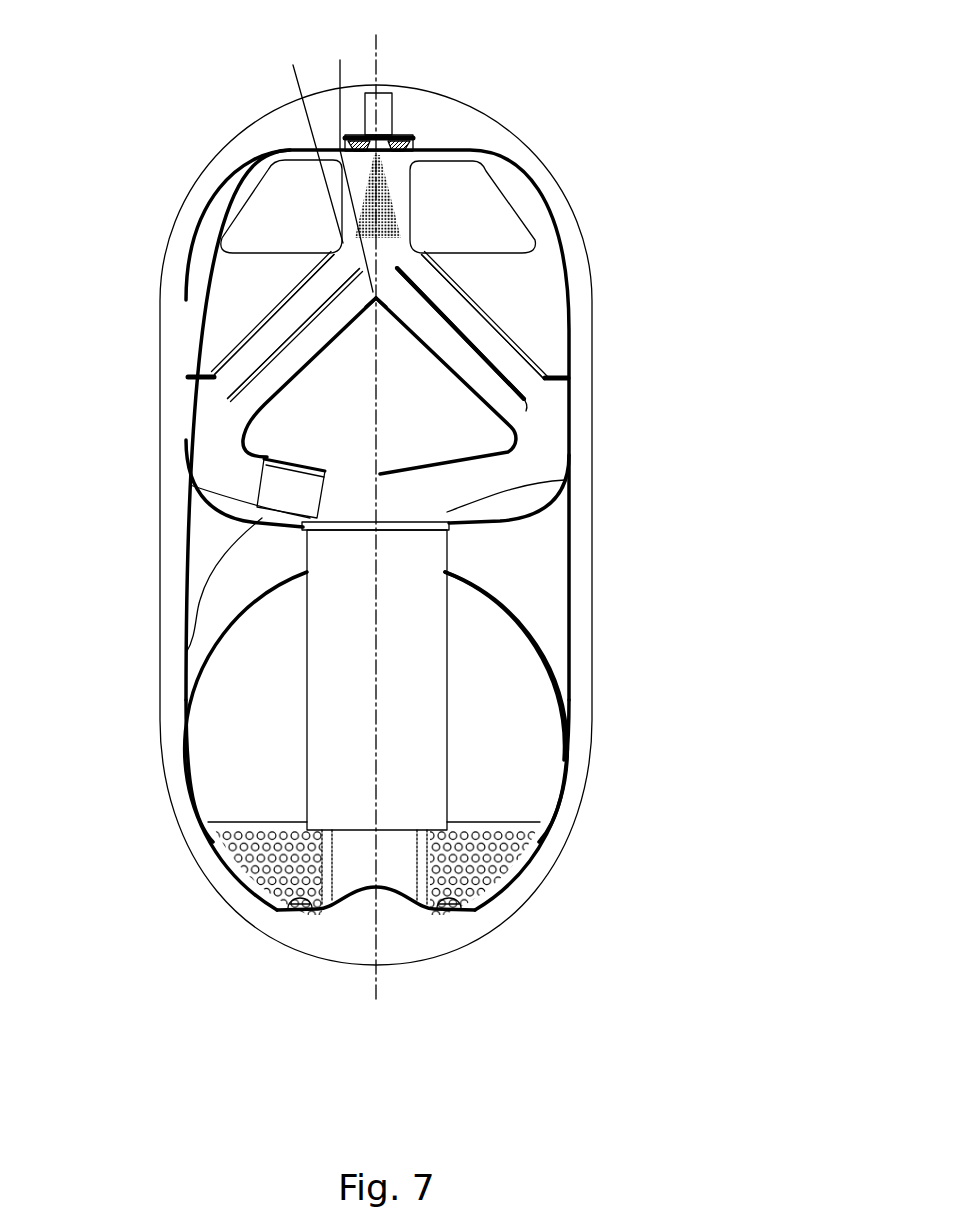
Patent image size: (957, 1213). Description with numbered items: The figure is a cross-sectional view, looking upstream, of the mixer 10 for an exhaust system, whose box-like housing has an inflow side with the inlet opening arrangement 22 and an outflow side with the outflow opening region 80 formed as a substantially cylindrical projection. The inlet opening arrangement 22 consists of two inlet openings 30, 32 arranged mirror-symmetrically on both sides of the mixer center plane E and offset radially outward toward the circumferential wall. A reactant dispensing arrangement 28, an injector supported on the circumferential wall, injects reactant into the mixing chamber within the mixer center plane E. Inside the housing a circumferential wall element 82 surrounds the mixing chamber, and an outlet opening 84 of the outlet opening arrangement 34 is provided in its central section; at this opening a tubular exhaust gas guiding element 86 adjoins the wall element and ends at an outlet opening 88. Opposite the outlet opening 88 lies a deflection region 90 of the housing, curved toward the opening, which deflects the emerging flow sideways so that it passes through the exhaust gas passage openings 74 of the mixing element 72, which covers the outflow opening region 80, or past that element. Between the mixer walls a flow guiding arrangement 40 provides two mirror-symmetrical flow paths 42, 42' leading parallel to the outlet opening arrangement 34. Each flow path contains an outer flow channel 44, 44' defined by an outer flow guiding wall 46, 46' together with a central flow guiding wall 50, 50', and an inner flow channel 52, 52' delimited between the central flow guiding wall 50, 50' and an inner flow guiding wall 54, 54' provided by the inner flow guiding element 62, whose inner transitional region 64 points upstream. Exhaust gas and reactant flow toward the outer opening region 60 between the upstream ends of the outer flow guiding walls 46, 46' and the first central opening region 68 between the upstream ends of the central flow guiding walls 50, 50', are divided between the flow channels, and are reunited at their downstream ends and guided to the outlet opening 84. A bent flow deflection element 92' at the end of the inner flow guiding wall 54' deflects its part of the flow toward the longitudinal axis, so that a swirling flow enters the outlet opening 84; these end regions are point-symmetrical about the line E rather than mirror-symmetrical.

The mixer 10 is at (700, 100).
The inlet opening arrangement 22 is at (213, 270).
The reactant dispensing arrangement 28 is at (388, 108).
The inlet opening 30 is at (503, 213).
The inlet opening 32 is at (263, 210).
The outlet opening arrangement 34 is at (472, 537).
The flow guiding arrangement 40 is at (413, 243).
The flow path 42 is at (568, 275).
The outer flow channel 44 is at (577, 315).
The outer flow guiding wall 46 is at (600, 296).
The central flow guiding wall 50 is at (564, 333).
The inner flow channel 52 is at (563, 333).
The inner flow guiding wall 54 is at (580, 405).
The flow path 42' is at (186, 313).
The outer flow channel 44' is at (187, 357).
The outer flow guiding wall 46' is at (144, 380).
The central flow guiding wall 50' is at (200, 387).
The inner flow channel 52' is at (221, 399).
The inner flow guiding wall 54' is at (204, 516).
The outer opening region 60 is at (302, 133).
The inner flow guiding element 62 is at (518, 447).
The inner transitional region 64 is at (372, 298).
The first central opening region 68 is at (349, 156).
The mixing element 72 is at (228, 820).
The exhaust gas passage openings 74 is at (255, 898).
The outflow opening region 80 is at (547, 765).
The circumferential wall element 82 is at (193, 520).
The outlet opening 84 is at (565, 481).
The exhaust gas guiding element 86 is at (445, 698).
The outlet opening 88 is at (350, 833).
The deflection region 90 is at (421, 903).
The flow deflection element 92' is at (159, 615).
The mixer center plane E is at (372, 993).